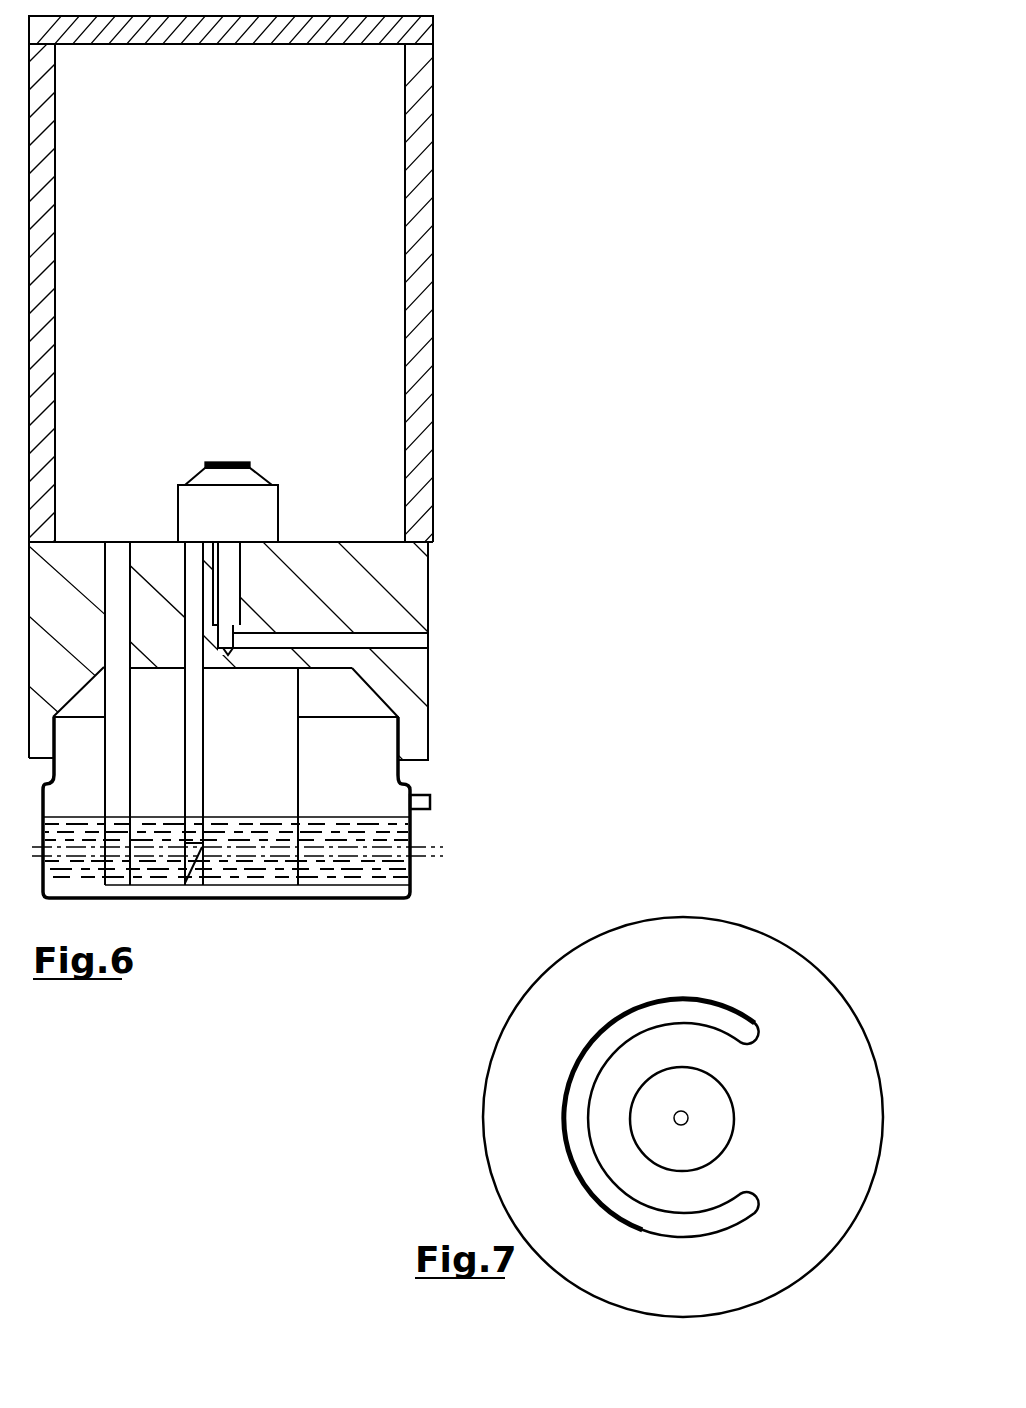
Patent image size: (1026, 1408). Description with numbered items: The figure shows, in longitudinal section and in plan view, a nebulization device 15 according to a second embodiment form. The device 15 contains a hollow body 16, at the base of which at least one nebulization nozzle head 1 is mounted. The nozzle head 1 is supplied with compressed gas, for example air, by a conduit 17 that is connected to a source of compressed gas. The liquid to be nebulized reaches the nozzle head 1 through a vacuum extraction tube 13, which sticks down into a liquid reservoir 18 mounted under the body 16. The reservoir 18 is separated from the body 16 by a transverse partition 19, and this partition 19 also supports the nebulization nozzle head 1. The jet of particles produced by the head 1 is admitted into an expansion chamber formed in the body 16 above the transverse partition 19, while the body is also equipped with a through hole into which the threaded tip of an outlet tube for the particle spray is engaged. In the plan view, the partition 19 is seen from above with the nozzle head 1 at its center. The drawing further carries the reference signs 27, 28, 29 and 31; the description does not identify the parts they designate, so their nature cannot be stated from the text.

In FIG. 6, the nebulization nozzle head 1 is at (253, 515).
In FIG. 7, the nebulization nozzle head 1 is at (657, 1088).
In FIG. 6, the vacuum extraction tube 13 is at (195, 695).
In FIG. 6, the nebulization device 15 is at (433, 242).
In FIG. 6, the hollow body 16 is at (413, 395).
In FIG. 6, the conduit 17 is at (400, 642).
In FIG. 6, the liquid reservoir 18 is at (410, 830).
In FIG. 6, the transverse partition 19 is at (412, 605).
In FIG. 7, the transverse partition 19 is at (733, 973).
In FIG. 6, the cover plate 27 is at (433, 33).
In FIG. 7, the C-shaped slot 28 is at (580, 1147).
In FIG. 6, the outlet nipple 29 is at (428, 793).
In FIG. 6, the liquid 31 is at (238, 753).